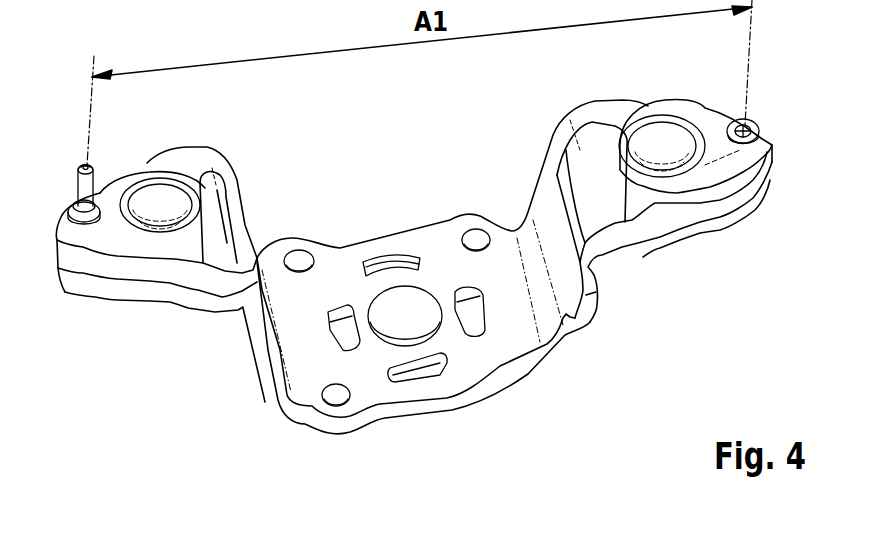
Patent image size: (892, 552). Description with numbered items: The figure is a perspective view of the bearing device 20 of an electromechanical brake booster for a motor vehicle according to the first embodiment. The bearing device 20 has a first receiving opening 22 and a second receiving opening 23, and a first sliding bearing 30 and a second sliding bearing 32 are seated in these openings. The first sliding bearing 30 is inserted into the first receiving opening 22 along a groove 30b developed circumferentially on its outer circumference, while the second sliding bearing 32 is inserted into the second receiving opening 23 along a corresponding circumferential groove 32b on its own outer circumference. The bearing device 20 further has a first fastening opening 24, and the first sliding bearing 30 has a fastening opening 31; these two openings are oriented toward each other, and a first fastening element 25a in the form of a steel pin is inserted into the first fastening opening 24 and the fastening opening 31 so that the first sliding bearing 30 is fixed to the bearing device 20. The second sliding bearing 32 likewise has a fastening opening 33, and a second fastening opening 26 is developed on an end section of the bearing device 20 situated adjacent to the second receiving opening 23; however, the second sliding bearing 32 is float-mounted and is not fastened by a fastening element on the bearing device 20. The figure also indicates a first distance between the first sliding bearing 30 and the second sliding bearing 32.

The bearing device 20 is at (437, 432).
The first receiving opening 22 is at (213, 184).
The second receiving opening 23 is at (588, 163).
The first fastening opening 24 is at (72, 270).
The first fastening element 25a is at (80, 178).
The second fastening opening 26 is at (765, 183).
The first sliding bearing 30 is at (124, 178).
The groove 30b is at (124, 282).
The fastening opening 31 is at (73, 193).
The second sliding bearing 32 is at (697, 113).
The groove 32b is at (688, 217).
The fastening opening 33 is at (758, 133).